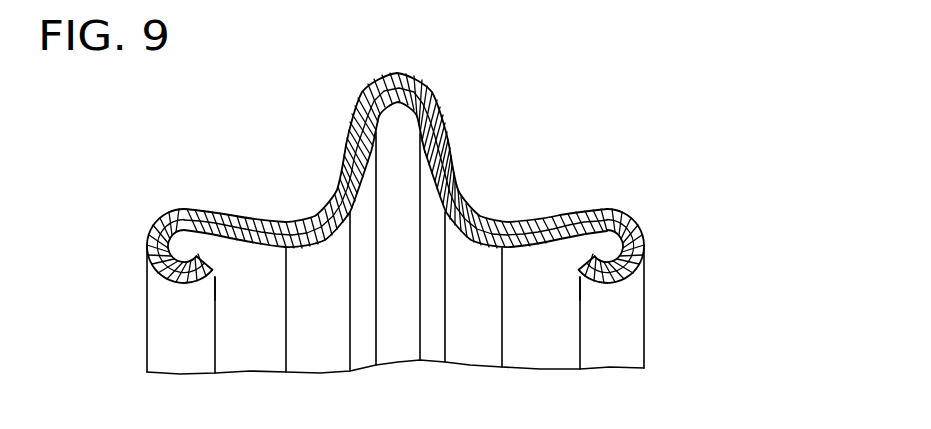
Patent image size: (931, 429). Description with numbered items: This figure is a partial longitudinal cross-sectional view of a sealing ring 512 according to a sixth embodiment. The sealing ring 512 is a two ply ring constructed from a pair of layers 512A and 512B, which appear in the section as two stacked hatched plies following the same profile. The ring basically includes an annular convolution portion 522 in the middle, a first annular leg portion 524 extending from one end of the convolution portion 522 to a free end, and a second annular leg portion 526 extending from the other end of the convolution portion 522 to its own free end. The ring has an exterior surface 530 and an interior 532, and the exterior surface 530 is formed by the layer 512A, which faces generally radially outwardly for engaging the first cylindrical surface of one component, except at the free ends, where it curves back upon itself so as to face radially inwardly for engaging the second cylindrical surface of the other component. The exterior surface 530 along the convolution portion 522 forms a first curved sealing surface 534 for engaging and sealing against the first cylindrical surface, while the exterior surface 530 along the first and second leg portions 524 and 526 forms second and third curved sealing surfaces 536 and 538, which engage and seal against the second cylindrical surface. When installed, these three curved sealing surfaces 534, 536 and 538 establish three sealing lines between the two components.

The sealing ring 512 is at (588, 153).
The layer 512A is at (445, 126).
The layer 512B is at (474, 212).
The annular convolution portion 522 is at (439, 99).
The first annular leg portion 524 is at (150, 242).
The second annular leg portion 526 is at (644, 243).
The exterior surface 530 is at (352, 128).
The interior 532 is at (346, 179).
The first curved sealing surface 534 is at (390, 70).
The second curved sealing surface 536 is at (180, 284).
The third curved sealing surface 538 is at (631, 280).